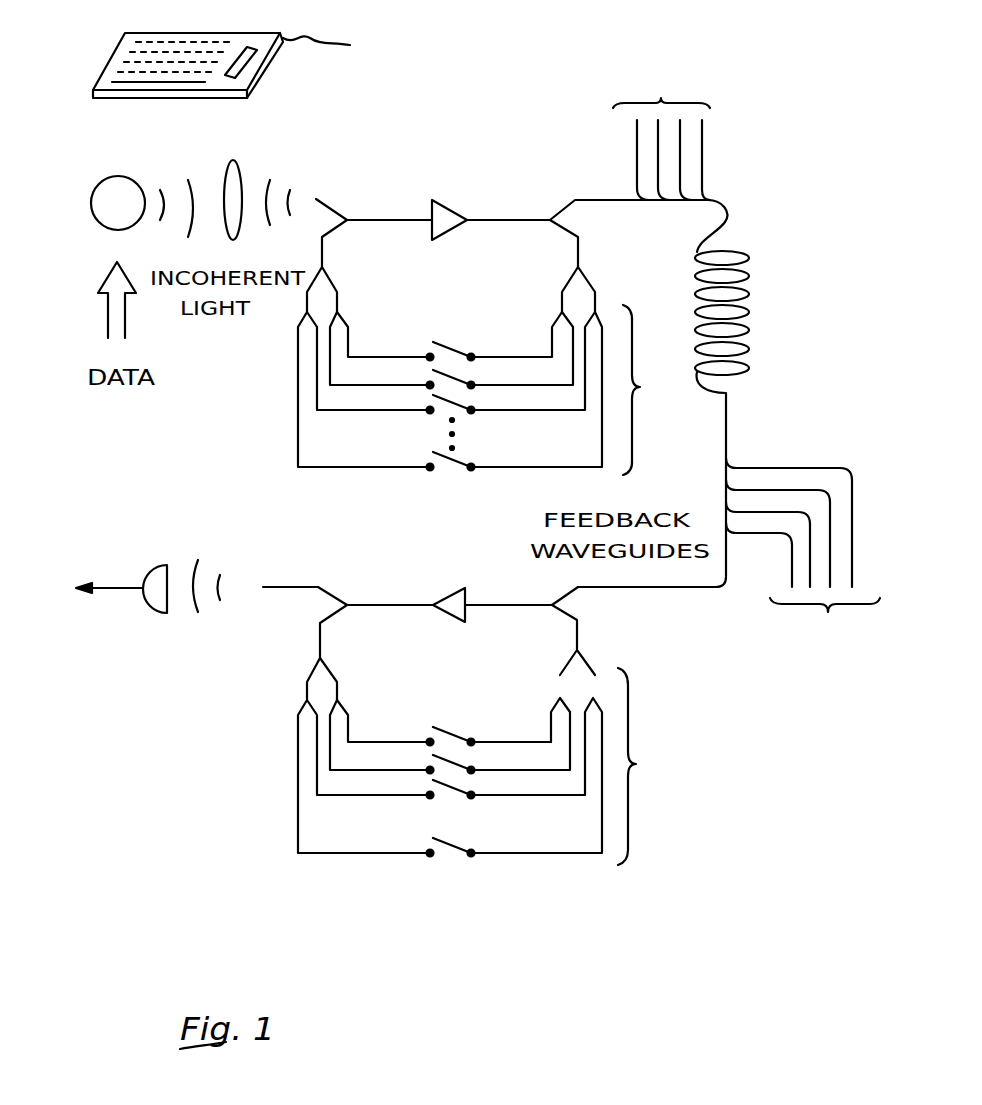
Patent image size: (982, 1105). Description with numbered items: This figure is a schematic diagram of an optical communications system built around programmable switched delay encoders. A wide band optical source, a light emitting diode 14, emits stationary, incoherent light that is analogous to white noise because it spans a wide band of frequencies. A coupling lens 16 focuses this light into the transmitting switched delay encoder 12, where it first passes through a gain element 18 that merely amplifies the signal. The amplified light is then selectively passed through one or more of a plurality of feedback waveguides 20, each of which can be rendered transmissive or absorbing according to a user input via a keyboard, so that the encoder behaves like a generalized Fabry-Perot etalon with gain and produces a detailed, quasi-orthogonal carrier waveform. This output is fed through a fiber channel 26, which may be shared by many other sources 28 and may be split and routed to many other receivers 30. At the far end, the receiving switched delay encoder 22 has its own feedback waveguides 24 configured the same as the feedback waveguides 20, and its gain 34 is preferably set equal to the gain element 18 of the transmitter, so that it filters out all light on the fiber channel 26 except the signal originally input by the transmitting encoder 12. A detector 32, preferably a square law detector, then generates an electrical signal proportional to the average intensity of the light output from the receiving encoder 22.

The transmitting switched delay encoder 12 is at (412, 153).
The light emitting diode 14 is at (91, 200).
The coupling lens 16 is at (243, 172).
The gain element 18 is at (455, 200).
The feedback waveguides 20 is at (551, 390).
The receiving switched delay encoder 22 is at (113, 51).
The feedback waveguides 24 is at (243, 890).
The fiber channel 26 is at (753, 365).
The sources 28 is at (727, 153).
The receivers 30 is at (867, 508).
The detector 32 is at (152, 608).
The gain 34 is at (466, 612).